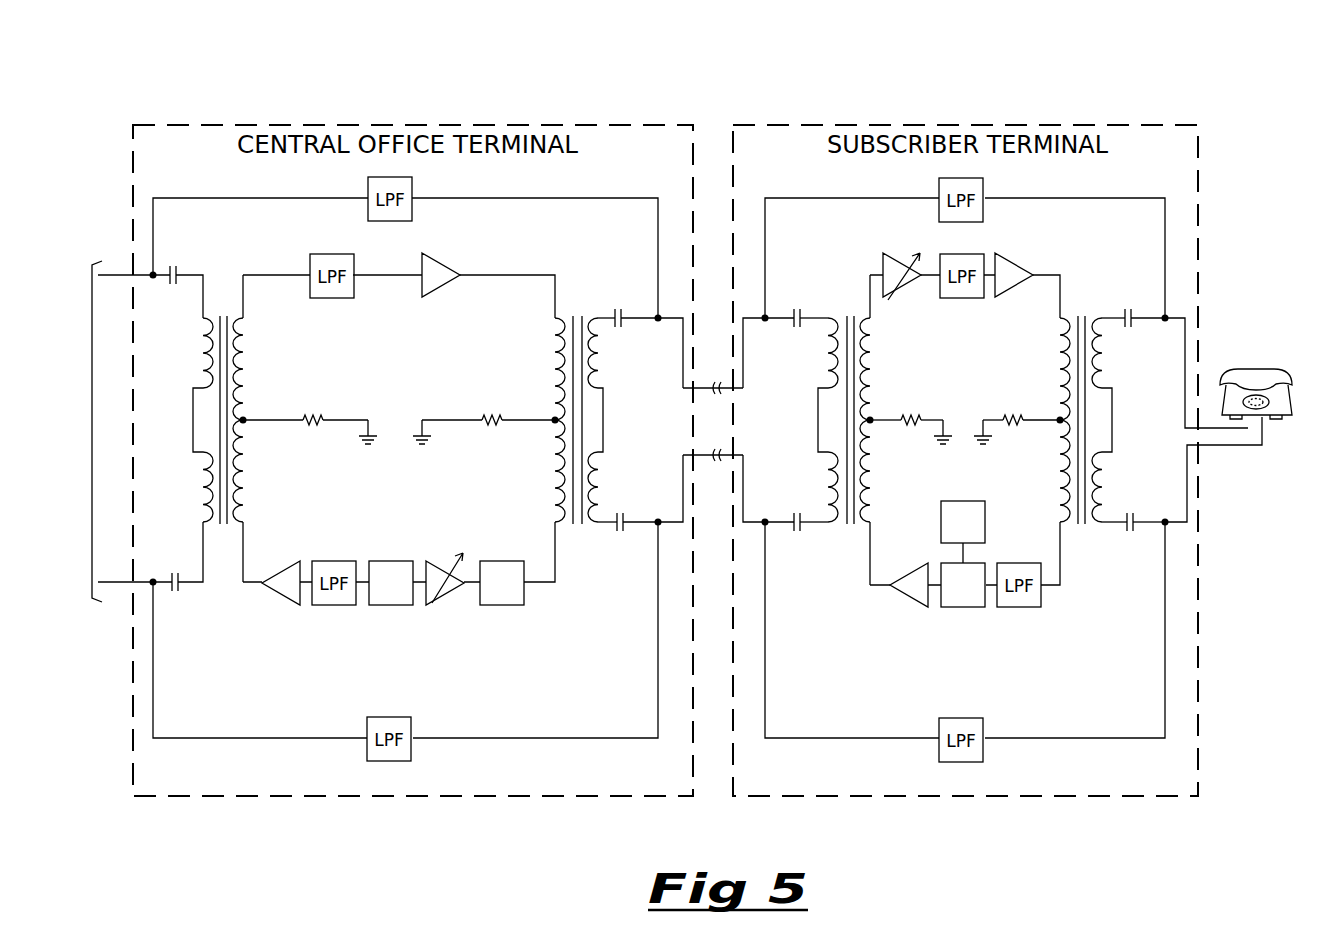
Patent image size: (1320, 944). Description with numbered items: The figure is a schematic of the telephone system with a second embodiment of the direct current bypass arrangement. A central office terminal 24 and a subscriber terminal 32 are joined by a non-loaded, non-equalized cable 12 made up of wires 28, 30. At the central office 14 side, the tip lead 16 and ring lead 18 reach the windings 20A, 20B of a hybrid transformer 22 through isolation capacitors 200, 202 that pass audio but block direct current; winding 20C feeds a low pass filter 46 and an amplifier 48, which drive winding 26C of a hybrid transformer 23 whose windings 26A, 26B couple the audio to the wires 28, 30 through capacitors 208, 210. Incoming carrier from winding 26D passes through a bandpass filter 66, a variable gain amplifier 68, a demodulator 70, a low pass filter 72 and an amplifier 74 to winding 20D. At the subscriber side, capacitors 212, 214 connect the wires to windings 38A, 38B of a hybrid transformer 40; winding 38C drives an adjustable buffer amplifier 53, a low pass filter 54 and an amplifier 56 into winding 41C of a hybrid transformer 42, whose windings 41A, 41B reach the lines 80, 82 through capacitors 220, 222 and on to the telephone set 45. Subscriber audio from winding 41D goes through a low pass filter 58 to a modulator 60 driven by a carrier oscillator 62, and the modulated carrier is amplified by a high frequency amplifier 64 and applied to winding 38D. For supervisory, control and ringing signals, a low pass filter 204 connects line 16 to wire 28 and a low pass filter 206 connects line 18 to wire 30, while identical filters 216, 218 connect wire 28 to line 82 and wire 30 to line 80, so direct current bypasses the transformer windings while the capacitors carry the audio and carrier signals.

The non-loaded, non-equalized two-wire cable 12 is at (699, 443).
The central office 14 is at (85, 431).
The tip lead 16 is at (120, 275).
The ring lead 18 is at (124, 583).
The winding of hybrid transformer 22 20A is at (207, 354).
The winding of hybrid transformer 22 20B is at (206, 500).
The winding of hybrid transformer 22 20C is at (243, 369).
The winding of hybrid transformer 22 20D is at (253, 475).
The hybrid transformer 22 is at (220, 316).
The hybrid transformer 23 is at (560, 316).
The central office terminal 24 is at (133, 155).
The winding of hybrid transformer 23 26A is at (598, 361).
The winding of hybrid transformer 23 26B is at (598, 497).
The winding of hybrid transformer 23 26C is at (555, 372).
The winding of hybrid transformer 23 26D is at (554, 474).
The telephone wire 28 is at (716, 387).
The telephone wire 30 is at (713, 456).
The subscriber terminal 32 is at (1198, 168).
The winding of hybrid transformer 40 38A is at (829, 368).
The winding of hybrid transformer 40 38B is at (829, 490).
The winding of hybrid transformer 40 38C is at (871, 364).
The winding of hybrid transformer 40 38D is at (873, 472).
The hybrid transformer 40 is at (845, 314).
The winding of hybrid transformer 42 41A is at (1101, 363).
The winding of hybrid transformer 42 41B is at (1105, 490).
The winding of hybrid transformer 42 41C is at (1061, 369).
The winding of hybrid transformer 42 41D is at (1061, 490).
The hybrid transformer 42 is at (1080, 314).
The telephone set 45 is at (1245, 368).
The low pass filter 46 is at (311, 254).
The amplifier 48 is at (436, 254).
The adjustable buffer amplifier 53 is at (899, 252).
The low pass filter circuit 54 is at (947, 254).
The amplifier 56 is at (1015, 254).
The low pass filter 58 is at (1028, 609).
The modulator 60 is at (974, 609).
The carrier oscillator 62 is at (941, 522).
The high frequency amplifier 64 is at (913, 609).
The bandpass filter 66 is at (507, 605).
The variable gain high frequency amplifier 68 is at (444, 603).
The demodulator 70 is at (393, 605).
The low pass filter circuit 72 is at (333, 605).
The amplifier 74 is at (282, 603).
The subscriber line wire 80 is at (1171, 526).
The subscriber line wire 82 is at (1186, 314).
The isolation capacitor 200 is at (173, 273).
The isolation capacitor 202 is at (180, 592).
The low pass filter 204 is at (412, 191).
The low pass filter 206 is at (413, 722).
The capacitor 208 is at (609, 311).
The capacitor 210 is at (620, 532).
The capacitor 212 is at (799, 308).
The capacitor 214 is at (797, 531).
The low pass filter 216 is at (985, 196).
The low pass filter 218 is at (990, 727).
The capacitor 220 is at (1140, 311).
The capacitor 222 is at (1134, 532).